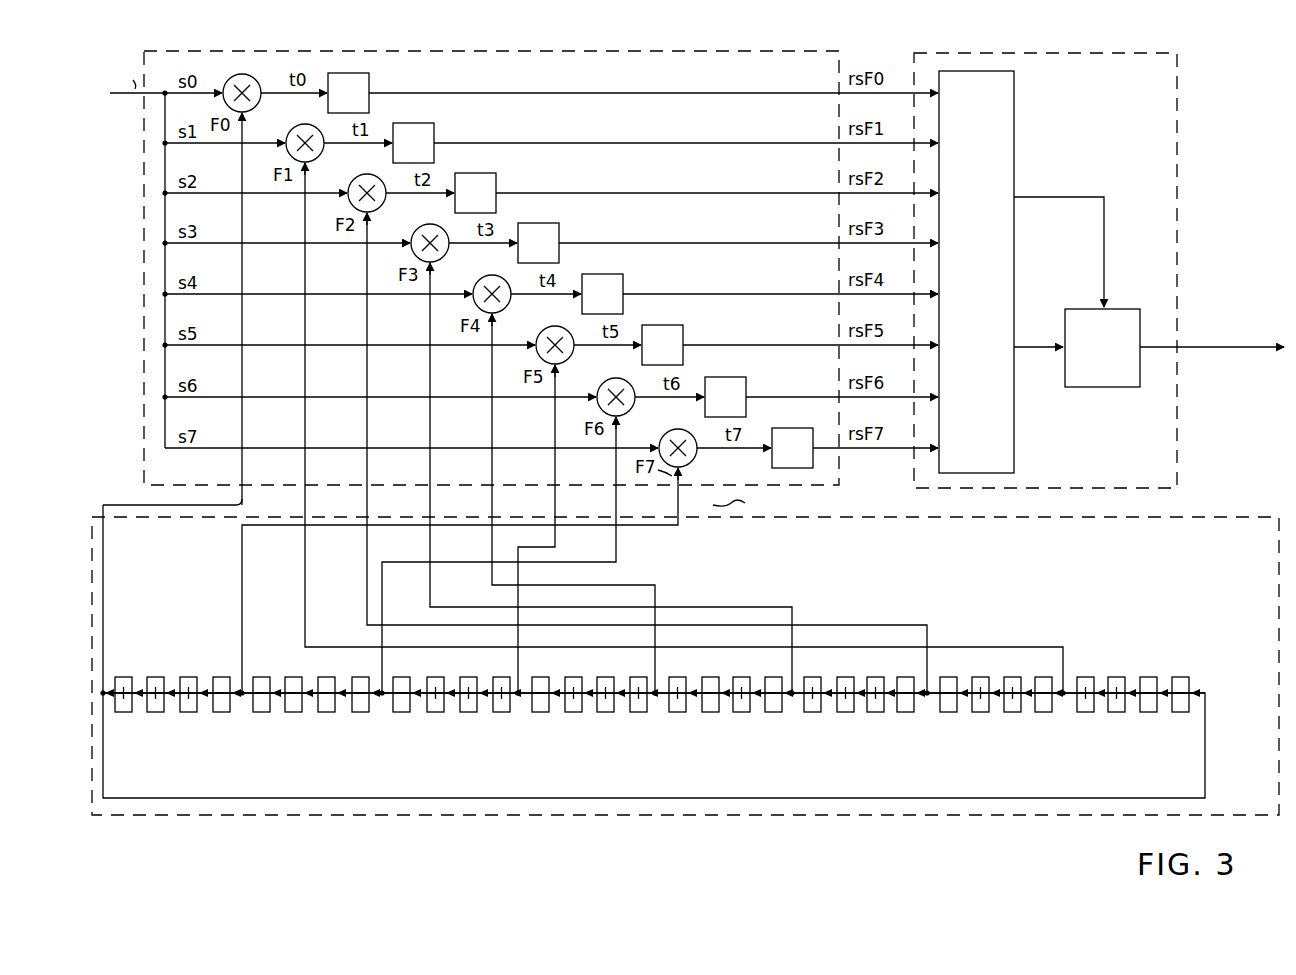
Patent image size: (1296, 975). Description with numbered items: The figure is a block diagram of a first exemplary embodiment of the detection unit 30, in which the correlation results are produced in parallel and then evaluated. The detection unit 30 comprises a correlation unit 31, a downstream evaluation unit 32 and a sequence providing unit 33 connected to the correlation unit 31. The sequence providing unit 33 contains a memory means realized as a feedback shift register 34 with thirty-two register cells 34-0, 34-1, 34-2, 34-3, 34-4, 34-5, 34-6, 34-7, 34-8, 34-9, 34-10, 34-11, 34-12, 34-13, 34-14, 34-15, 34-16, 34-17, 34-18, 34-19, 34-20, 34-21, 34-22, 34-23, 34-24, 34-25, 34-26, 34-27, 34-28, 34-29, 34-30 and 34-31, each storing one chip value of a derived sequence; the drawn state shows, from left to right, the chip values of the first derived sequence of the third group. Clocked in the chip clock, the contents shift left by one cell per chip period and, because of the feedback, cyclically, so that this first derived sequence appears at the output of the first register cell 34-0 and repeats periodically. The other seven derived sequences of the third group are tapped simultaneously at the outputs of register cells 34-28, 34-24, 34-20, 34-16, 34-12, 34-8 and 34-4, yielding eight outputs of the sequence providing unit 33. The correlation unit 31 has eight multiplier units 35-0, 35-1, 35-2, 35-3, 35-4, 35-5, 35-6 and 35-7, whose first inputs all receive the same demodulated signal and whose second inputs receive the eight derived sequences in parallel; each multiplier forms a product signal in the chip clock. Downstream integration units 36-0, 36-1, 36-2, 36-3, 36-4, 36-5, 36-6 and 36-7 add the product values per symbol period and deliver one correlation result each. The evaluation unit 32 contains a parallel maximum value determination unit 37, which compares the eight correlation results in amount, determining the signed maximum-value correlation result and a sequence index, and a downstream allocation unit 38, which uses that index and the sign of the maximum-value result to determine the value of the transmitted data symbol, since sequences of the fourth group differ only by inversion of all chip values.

The detection unit 30 is at (128, 481).
The correlation unit 31 is at (842, 478).
The evaluation unit 32 is at (1177, 484).
The sequence providing unit 33 is at (1004, 518).
The feedback shift register 34 is at (1208, 688).
The multiplier unit 35-0 is at (254, 108).
The multiplier unit 35-1 is at (317, 158).
The multiplier unit 35-2 is at (379, 208).
The multiplier unit 35-3 is at (442, 258).
The multiplier unit 35-4 is at (504, 309).
The multiplier unit 35-5 is at (567, 360).
The multiplier unit 35-6 is at (628, 412).
The multiplier unit 35-7 is at (690, 463).
The integration unit 36-0 is at (363, 72).
The integration unit 36-1 is at (428, 122).
The integration unit 36-2 is at (490, 172).
The integration unit 36-3 is at (553, 222).
The integration unit 36-4 is at (617, 273).
The integration unit 36-5 is at (677, 324).
The integration unit 36-6 is at (740, 376).
The integration unit 36-7 is at (832, 424).
The parallel maximum value determination unit 37 is at (1016, 442).
The allocation unit 38 is at (1090, 388).
The register cell 34-0 is at (123, 713).
The register cell 34-1 is at (155, 713).
The register cell 34-2 is at (188, 713).
The register cell 34-3 is at (221, 713).
The register cell 34-4 is at (261, 713).
The register cell 34-5 is at (293, 713).
The register cell 34-6 is at (326, 713).
The register cell 34-7 is at (360, 713).
The register cell 34-8 is at (401, 713).
The register cell 34-9 is at (435, 713).
The register cell 34-10 is at (468, 713).
The register cell 34-11 is at (501, 713).
The register cell 34-12 is at (540, 713).
The register cell 34-13 is at (573, 713).
The register cell 34-14 is at (605, 713).
The register cell 34-15 is at (638, 713).
The register cell 34-16 is at (677, 713).
The register cell 34-17 is at (710, 713).
The register cell 34-18 is at (741, 713).
The register cell 34-19 is at (773, 713).
The register cell 34-20 is at (812, 713).
The register cell 34-21 is at (845, 713).
The register cell 34-22 is at (875, 713).
The register cell 34-23 is at (905, 713).
The register cell 34-24 is at (948, 713).
The register cell 34-25 is at (980, 713).
The register cell 34-26 is at (1012, 713).
The register cell 34-27 is at (1043, 713).
The register cell 34-28 is at (1085, 713).
The register cell 34-29 is at (1116, 713).
The register cell 34-30 is at (1152, 713).
The register cell 34-31 is at (1182, 713).